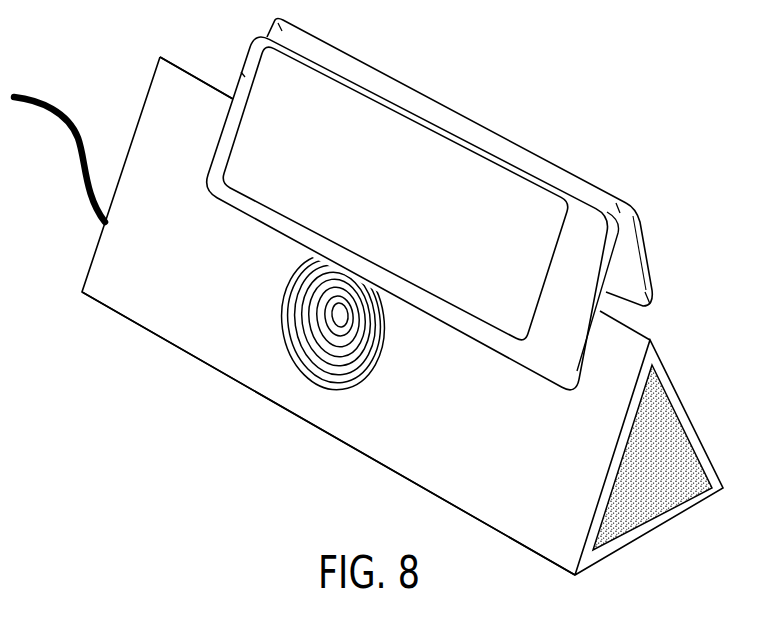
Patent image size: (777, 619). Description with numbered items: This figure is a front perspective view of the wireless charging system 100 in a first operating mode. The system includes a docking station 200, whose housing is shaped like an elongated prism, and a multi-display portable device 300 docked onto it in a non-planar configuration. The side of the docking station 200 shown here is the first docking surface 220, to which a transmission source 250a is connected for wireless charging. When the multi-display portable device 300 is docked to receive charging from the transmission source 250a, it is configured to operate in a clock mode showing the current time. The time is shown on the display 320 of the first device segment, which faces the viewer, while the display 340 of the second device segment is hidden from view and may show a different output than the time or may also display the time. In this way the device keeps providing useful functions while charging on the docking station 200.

The wireless charging system 100 is at (368, 297).
The docking station 200 is at (368, 314).
The first docking surface 220 is at (182, 344).
The transmission source 250a is at (305, 386).
The multi-display portable device 300 is at (448, 204).
The display 320 is at (247, 72).
The display 340 is at (648, 247).